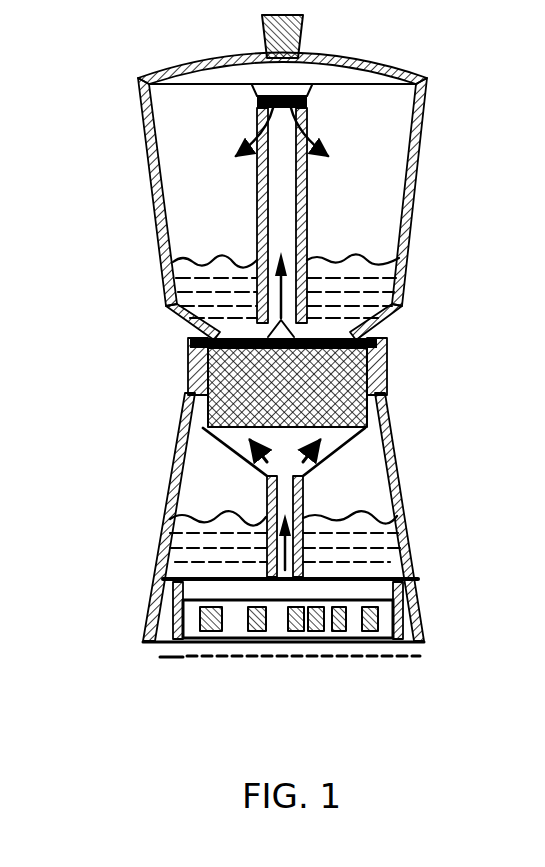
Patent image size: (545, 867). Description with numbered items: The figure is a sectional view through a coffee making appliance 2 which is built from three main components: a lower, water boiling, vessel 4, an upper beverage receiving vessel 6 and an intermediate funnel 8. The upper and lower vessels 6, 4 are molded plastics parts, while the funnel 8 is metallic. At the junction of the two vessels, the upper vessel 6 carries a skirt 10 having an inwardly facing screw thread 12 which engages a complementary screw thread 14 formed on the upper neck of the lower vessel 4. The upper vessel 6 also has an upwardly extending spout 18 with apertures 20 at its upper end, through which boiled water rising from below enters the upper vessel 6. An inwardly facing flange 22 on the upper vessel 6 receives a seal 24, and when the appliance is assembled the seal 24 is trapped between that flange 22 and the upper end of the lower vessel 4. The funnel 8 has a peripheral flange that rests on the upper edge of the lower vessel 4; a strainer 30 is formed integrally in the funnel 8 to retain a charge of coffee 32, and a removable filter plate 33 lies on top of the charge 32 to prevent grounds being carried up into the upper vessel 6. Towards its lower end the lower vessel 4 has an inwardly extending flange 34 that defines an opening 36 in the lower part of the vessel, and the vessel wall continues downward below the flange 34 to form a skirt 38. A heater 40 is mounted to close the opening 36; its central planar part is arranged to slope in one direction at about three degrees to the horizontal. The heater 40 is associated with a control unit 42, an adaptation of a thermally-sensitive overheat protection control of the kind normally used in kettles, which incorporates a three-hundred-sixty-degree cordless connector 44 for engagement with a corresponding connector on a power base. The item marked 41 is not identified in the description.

The coffee making appliance 2 is at (116, 365).
The lower vessel 4 is at (397, 447).
The upper vessel 6 is at (415, 184).
The funnel 8 is at (387, 405).
The skirt 10 is at (387, 353).
The screw thread 12 is at (190, 350).
The complementary screw thread 14 is at (385, 372).
The spout 18 is at (310, 226).
The apertures 20 is at (305, 101).
The flange 22 is at (182, 322).
The seal 24 is at (388, 328).
The strainer 30 is at (243, 502).
The charge of coffee 32 is at (181, 373).
The filter plate 33 is at (165, 290).
The flange 34 is at (320, 593).
The opening 36 is at (167, 513).
The skirt 38 is at (430, 608).
The heater 40 is at (363, 520).
The inlet 41 is at (165, 556).
The control unit 42 is at (180, 644).
The cordless connector 44 is at (285, 622).